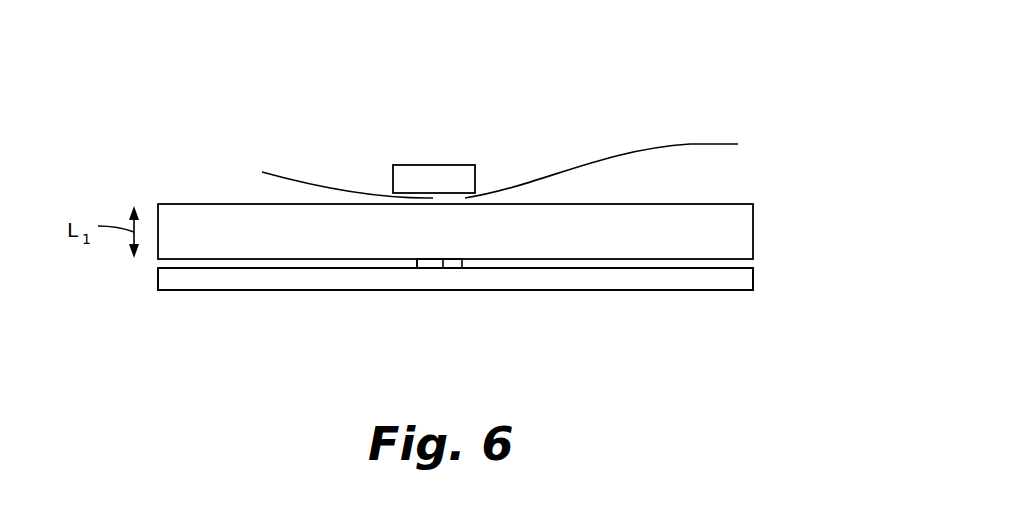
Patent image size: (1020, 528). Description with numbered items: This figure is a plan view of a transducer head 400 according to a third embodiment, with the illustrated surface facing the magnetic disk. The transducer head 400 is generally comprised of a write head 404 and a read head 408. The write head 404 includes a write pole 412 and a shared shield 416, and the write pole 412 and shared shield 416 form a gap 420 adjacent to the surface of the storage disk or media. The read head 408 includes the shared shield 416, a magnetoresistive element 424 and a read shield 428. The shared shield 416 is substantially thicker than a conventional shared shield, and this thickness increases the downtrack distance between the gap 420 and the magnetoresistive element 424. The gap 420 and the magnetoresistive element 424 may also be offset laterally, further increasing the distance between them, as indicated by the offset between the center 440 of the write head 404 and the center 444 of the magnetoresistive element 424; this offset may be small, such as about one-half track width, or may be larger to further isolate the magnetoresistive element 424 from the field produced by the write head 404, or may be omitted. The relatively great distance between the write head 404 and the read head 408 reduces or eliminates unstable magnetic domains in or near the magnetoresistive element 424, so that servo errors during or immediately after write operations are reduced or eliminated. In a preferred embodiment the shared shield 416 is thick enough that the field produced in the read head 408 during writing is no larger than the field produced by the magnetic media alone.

The transducer head 400 is at (431, 118).
The write head 404 is at (518, 173).
The read head 408 is at (378, 310).
The write pole 412 is at (410, 178).
The shared shield 416 is at (728, 232).
The gap 420 is at (631, 165).
The magnetoresistive element 424 is at (443, 260).
The read shield 428 is at (703, 275).
The center of the write head 440 is at (320, 174).
The center of the magnetoresistive element 444 is at (433, 264).